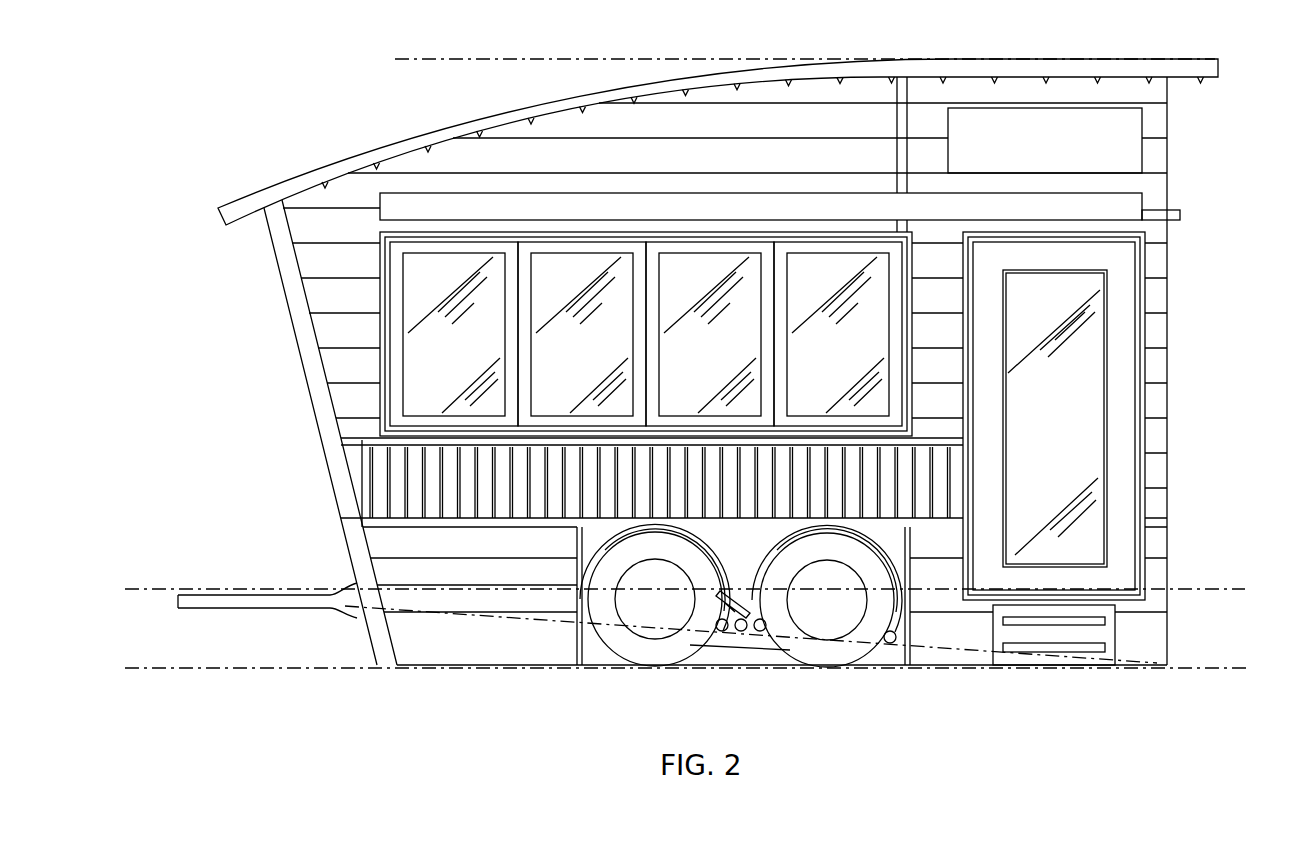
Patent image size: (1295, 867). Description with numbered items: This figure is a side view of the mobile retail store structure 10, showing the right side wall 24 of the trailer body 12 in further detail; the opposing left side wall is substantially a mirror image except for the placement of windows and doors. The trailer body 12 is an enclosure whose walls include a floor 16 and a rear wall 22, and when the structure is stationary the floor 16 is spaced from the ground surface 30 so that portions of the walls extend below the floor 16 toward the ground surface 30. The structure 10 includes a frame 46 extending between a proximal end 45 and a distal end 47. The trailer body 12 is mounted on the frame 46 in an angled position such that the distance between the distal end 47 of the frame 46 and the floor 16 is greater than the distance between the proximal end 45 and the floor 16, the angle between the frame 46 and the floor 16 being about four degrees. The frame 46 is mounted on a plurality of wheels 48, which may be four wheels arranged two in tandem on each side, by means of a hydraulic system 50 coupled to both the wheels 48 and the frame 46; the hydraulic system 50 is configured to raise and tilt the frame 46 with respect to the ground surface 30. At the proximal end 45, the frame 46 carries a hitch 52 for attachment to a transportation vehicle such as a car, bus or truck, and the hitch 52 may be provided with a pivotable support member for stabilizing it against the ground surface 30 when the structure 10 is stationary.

The mobile retail store structure 10 is at (218, 112).
The trailer body 12 is at (382, 139).
The floor 16 is at (1228, 588).
The rear wall 22 is at (318, 385).
The right side wall 24 is at (740, 120).
The ground surface 30 is at (200, 667).
The proximal end 45 is at (366, 621).
The frame 46 is at (730, 648).
The distal end 47 is at (1148, 664).
The plurality of wheels 48 is at (820, 653).
The hydraulic system 50 is at (723, 594).
The hitch 52 is at (248, 603).